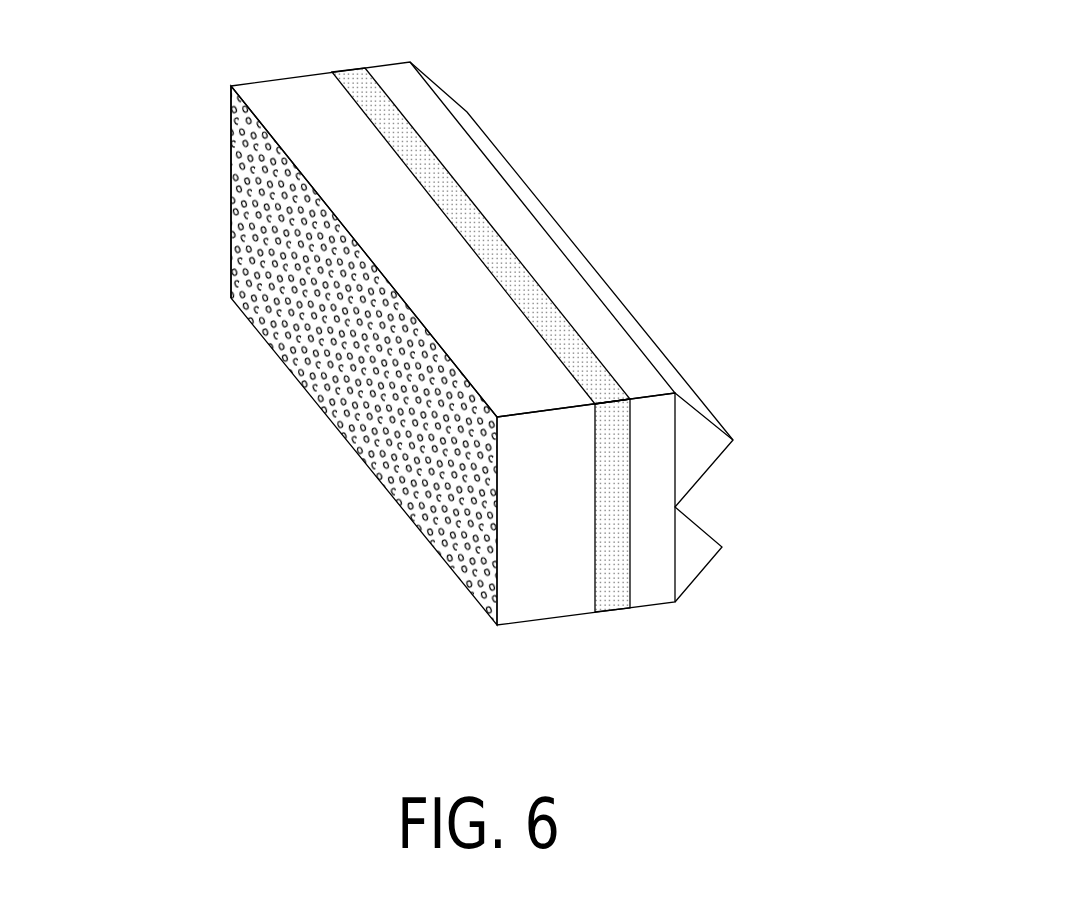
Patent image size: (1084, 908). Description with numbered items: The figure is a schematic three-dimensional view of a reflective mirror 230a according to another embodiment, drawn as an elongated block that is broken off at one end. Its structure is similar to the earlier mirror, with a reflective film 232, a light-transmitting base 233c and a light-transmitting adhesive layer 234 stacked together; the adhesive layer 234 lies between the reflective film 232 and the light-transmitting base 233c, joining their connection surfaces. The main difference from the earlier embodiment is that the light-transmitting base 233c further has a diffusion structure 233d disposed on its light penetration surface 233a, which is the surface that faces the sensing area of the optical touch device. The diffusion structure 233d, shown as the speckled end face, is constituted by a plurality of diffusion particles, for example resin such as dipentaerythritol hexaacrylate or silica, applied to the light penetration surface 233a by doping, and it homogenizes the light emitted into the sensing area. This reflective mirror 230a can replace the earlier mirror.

The reflective mirror 230a is at (502, 401).
The reflective film 232 is at (432, 379).
The light penetration surface 233a is at (235, 234).
The light-transmitting base 233c is at (533, 612).
The diffusion structure 233d is at (233, 143).
The light-transmitting adhesive layer 234 is at (618, 600).